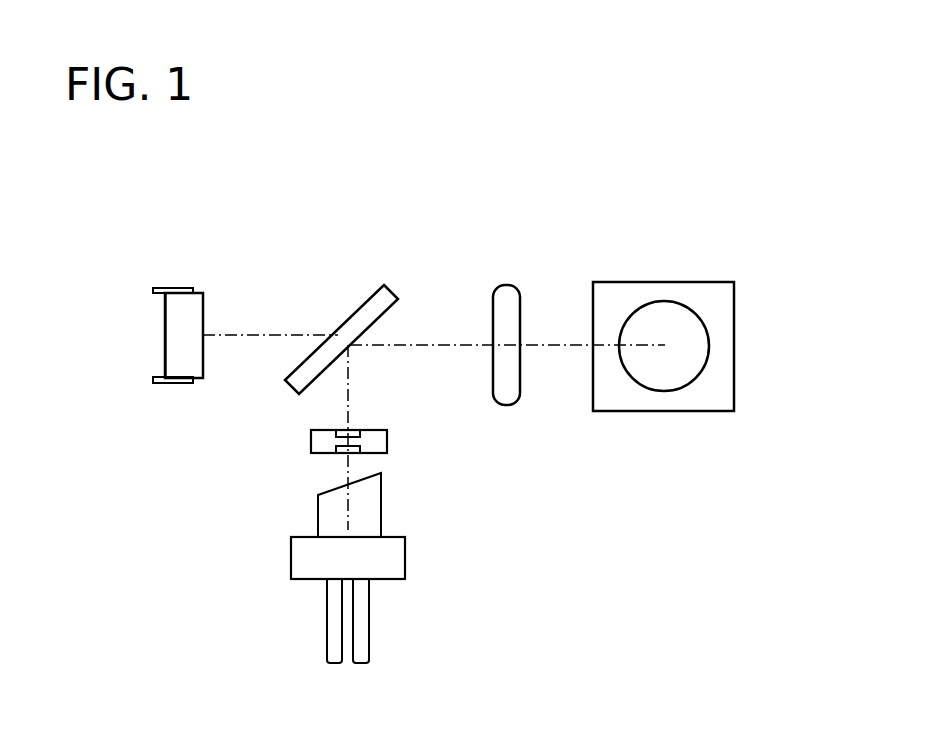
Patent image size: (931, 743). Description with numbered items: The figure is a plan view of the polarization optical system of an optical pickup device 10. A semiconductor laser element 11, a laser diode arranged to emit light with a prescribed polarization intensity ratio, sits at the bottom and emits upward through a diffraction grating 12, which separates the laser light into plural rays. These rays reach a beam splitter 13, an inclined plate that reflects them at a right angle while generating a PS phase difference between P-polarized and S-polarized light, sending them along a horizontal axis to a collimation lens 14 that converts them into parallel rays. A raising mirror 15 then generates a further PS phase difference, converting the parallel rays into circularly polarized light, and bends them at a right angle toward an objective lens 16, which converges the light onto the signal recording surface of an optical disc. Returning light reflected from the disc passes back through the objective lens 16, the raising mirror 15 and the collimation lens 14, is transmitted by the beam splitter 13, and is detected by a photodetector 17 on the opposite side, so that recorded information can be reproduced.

The optical pickup device 10 is at (131, 216).
The semiconductor laser element 11 is at (405, 560).
The diffraction grating 12 is at (387, 440).
The beam splitter 13 is at (362, 318).
The collimation lens 14 is at (520, 313).
The raising mirror 15 is at (734, 381).
The objective lens 16 is at (693, 314).
The photodetector 17 is at (172, 383).